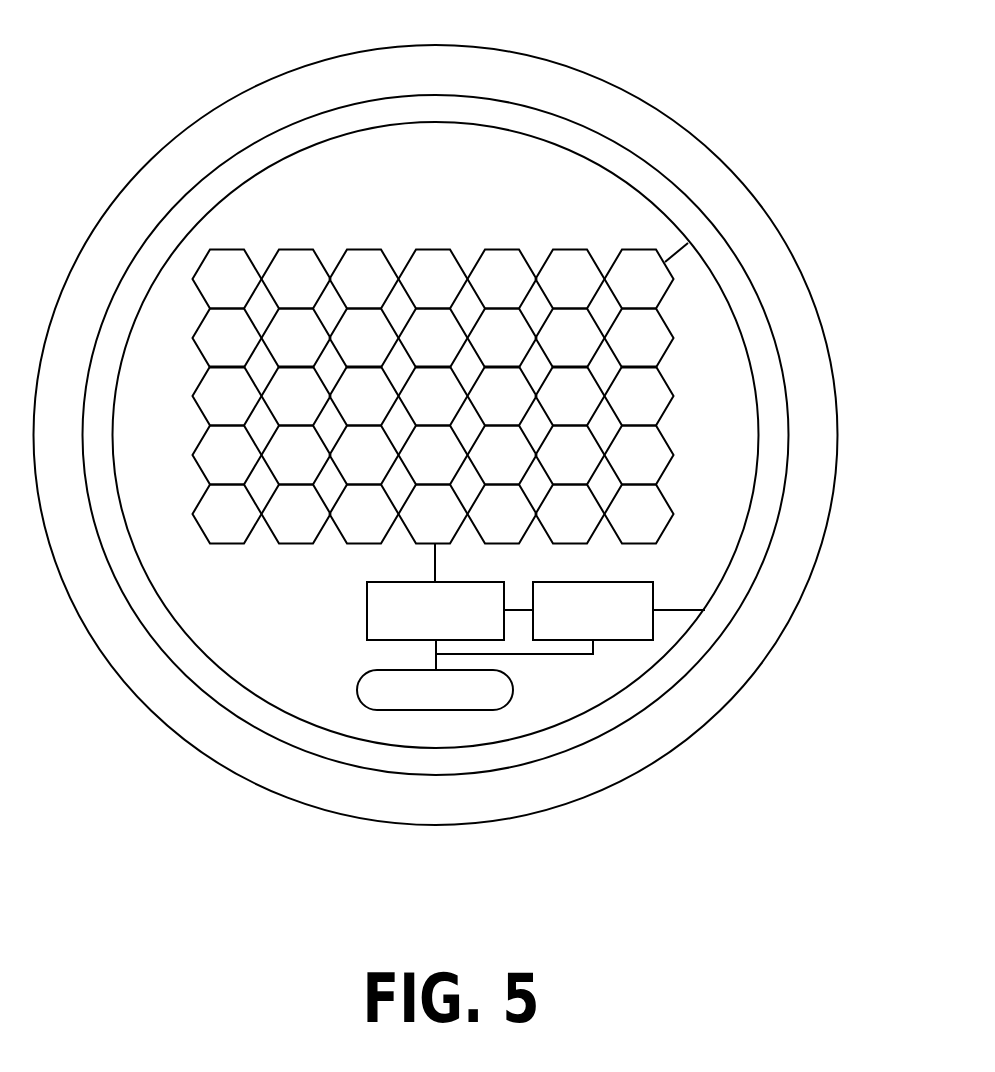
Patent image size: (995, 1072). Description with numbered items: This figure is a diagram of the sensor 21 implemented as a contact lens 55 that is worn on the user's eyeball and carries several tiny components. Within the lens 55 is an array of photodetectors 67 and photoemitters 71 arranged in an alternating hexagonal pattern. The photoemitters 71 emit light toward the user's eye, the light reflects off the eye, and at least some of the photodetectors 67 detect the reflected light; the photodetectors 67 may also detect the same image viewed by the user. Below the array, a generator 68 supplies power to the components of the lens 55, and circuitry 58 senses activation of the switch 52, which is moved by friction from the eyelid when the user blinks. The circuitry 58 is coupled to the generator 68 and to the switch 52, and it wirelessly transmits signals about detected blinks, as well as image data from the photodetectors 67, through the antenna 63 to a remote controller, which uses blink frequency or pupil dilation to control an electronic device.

The sensor 21 is at (768, 75).
The contact lens 55 is at (777, 228).
The antenna 63 is at (430, 93).
The photodetectors 67 is at (213, 291).
The photoemitters 71 is at (282, 291).
The generator 68 is at (367, 592).
The circuitry 58 is at (632, 582).
The switch 52 is at (395, 710).